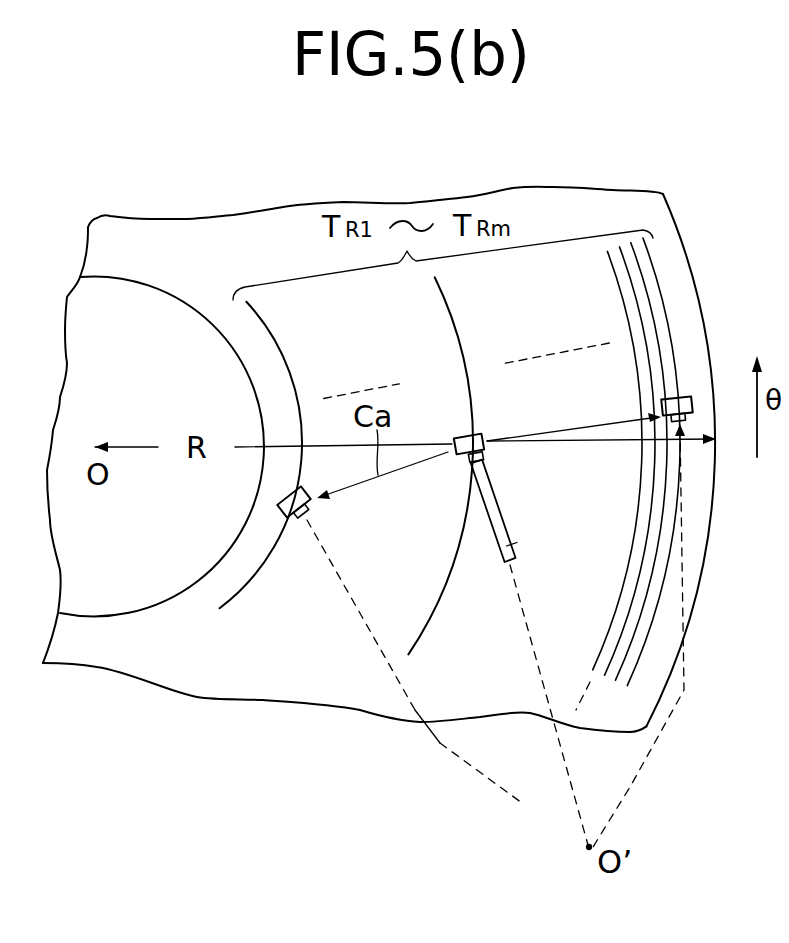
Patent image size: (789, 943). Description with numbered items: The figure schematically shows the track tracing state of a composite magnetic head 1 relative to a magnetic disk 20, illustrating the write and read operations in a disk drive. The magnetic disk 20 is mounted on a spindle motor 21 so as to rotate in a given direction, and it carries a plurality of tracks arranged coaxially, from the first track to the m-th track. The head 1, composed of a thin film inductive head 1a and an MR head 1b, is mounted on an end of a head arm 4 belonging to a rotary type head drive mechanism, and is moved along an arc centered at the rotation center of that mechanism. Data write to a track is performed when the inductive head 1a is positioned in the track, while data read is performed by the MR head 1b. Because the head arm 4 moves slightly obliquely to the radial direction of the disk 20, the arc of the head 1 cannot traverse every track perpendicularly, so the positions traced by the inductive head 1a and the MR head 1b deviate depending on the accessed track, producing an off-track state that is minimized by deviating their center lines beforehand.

The magnetic disk 20 is at (180, 237).
The spindle motor 21 is at (95, 322).
The composite magnetic head 1 is at (492, 427).
The thin film inductive head 1a is at (482, 433).
The MR head 1b is at (487, 453).
The head arm 4 is at (513, 543).